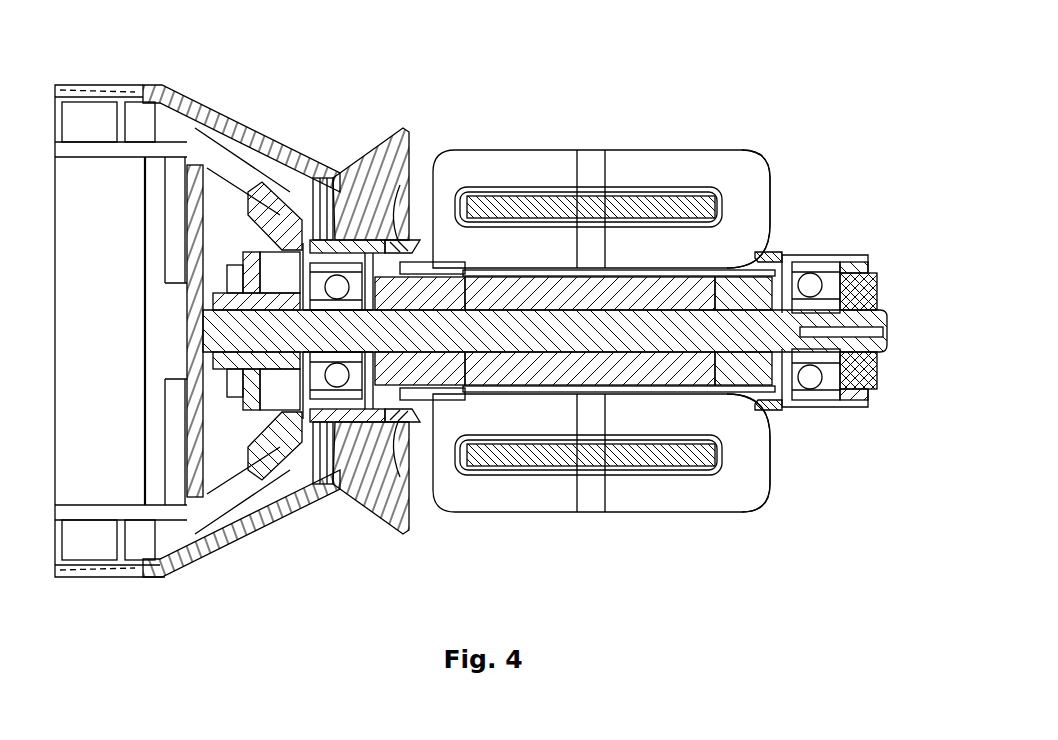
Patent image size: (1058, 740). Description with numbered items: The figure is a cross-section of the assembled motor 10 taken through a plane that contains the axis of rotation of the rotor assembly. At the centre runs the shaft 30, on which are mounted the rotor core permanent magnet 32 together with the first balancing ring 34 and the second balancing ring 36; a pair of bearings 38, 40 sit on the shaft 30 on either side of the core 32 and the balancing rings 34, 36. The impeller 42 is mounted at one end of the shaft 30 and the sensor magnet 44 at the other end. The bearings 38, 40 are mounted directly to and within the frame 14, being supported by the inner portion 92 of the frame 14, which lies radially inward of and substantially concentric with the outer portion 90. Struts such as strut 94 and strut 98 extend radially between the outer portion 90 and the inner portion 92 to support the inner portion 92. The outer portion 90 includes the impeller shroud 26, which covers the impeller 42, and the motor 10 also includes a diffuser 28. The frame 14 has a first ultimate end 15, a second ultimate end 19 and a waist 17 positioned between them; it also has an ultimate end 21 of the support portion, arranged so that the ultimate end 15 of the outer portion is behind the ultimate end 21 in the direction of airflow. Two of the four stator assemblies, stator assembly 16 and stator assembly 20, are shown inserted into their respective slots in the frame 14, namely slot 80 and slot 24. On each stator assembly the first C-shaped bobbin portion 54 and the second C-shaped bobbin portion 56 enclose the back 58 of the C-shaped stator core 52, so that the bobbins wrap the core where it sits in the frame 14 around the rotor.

The motor 10 is at (489, 349).
The frame 14 is at (837, 410).
The first ultimate end 15 is at (387, 138).
The stator assembly 16 is at (608, 118).
The waist 17 is at (308, 522).
The second ultimate end 19 is at (150, 603).
The stator assembly 20 is at (605, 548).
The ultimate end of the support portion 21 is at (428, 416).
The slot 24 is at (521, 408).
The impeller shroud 26 is at (247, 137).
The diffuser 28 is at (75, 510).
The shaft 30 is at (220, 333).
The rotor core permanent magnet 32 is at (673, 303).
The first balancing ring 34 is at (423, 290).
The second balancing ring 36 is at (760, 395).
The bearing 38 is at (327, 357).
The bearing 40 is at (795, 256).
The impeller 42 is at (250, 233).
The sensor magnet 44 is at (880, 378).
The C-shaped stator core 52 is at (510, 202).
The first C-shaped bobbin portion 54 is at (480, 157).
The second C-shaped bobbin portion 56 is at (753, 160).
The back 58 is at (645, 205).
The slot 80 is at (647, 250).
The outer portion 90 is at (375, 522).
The inner portion 92 is at (320, 180).
The strut 94 is at (372, 222).
The strut 98 is at (402, 522).